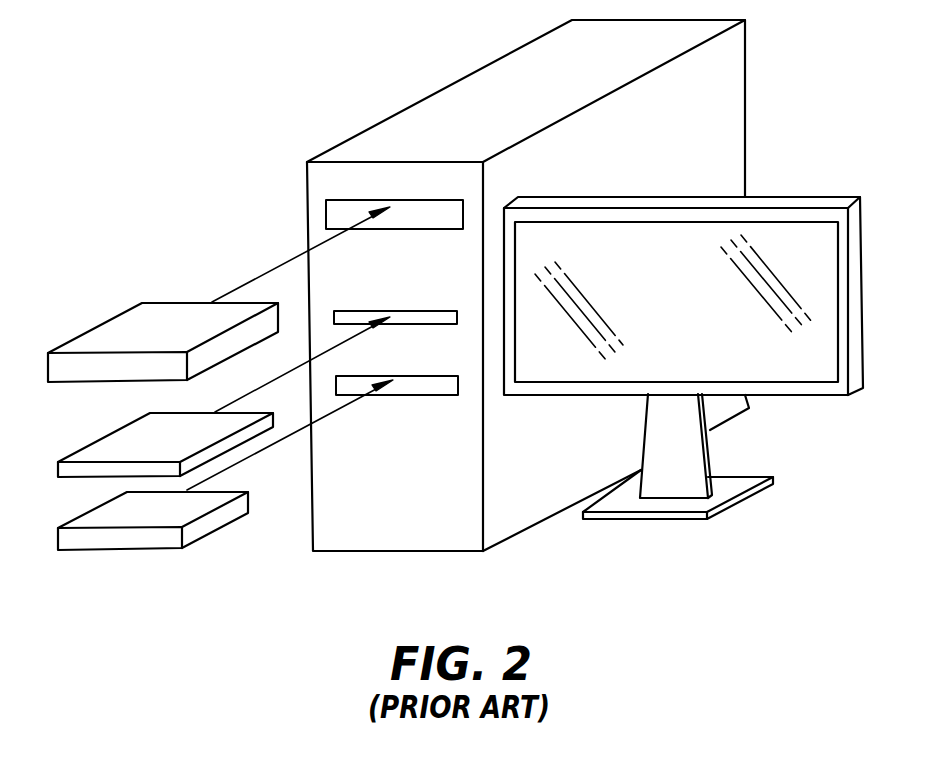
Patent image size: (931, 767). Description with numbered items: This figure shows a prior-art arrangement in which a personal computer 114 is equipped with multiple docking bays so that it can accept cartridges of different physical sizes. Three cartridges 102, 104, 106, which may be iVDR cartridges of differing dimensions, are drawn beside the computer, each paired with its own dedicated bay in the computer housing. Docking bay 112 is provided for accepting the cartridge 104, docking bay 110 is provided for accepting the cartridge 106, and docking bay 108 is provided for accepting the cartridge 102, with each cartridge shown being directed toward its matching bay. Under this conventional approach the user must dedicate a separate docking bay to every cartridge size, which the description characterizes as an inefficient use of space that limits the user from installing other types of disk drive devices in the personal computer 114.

The cartridge 102 is at (162, 550).
The cartridge 104 is at (138, 328).
The cartridge 106 is at (140, 442).
The docking bay 108 is at (362, 376).
The docking bay 110 is at (397, 311).
The docking bay 112 is at (325, 210).
The personal computer 114 is at (420, 551).